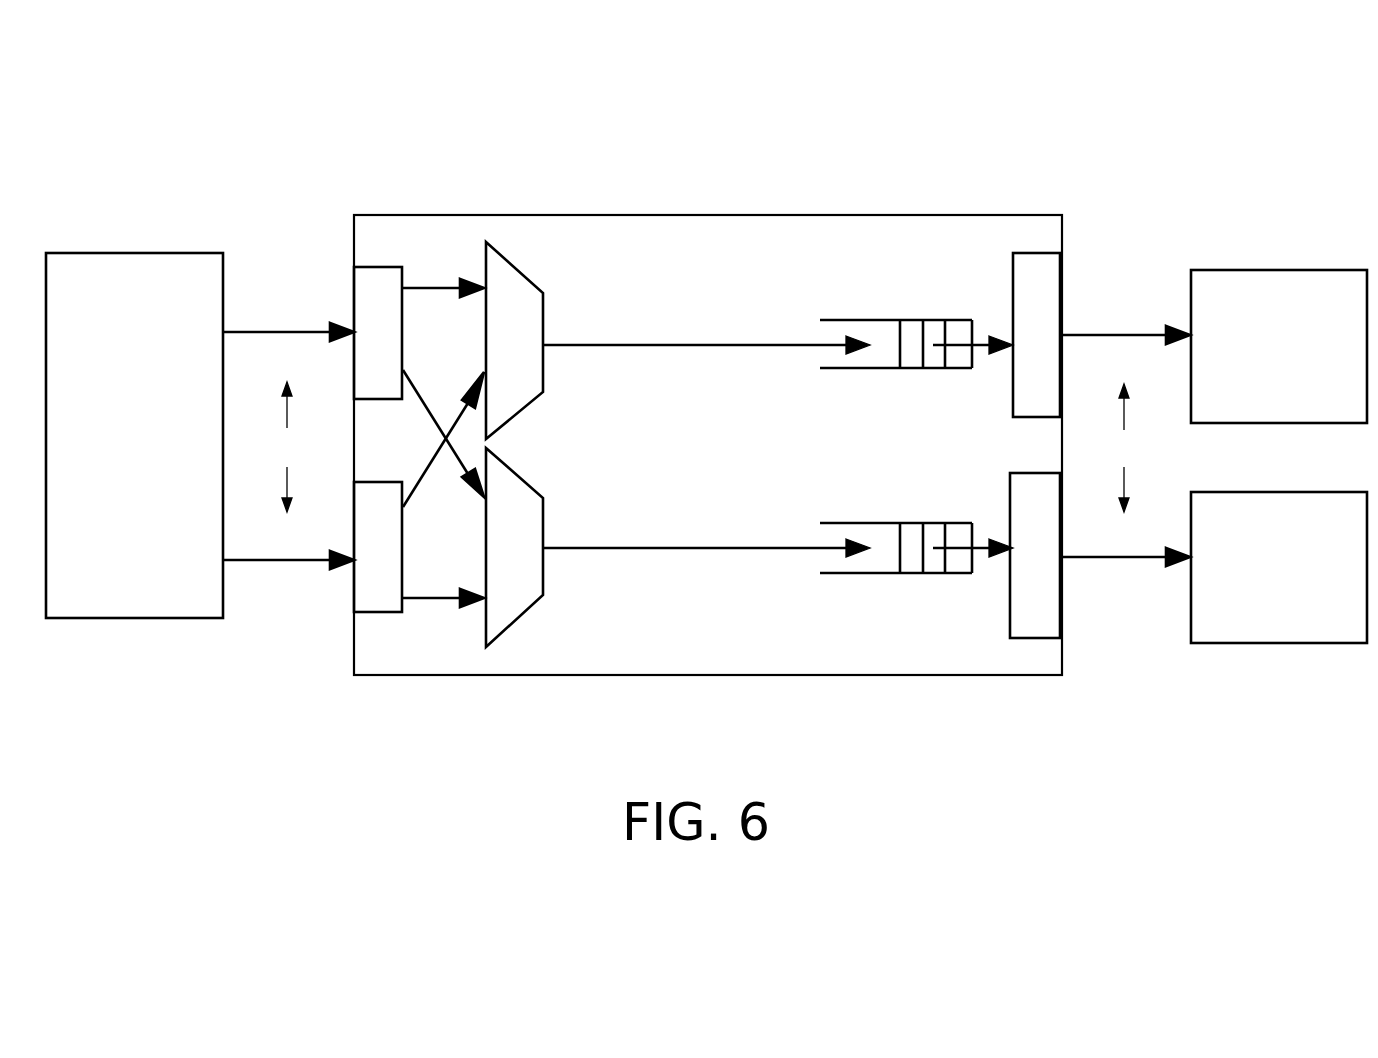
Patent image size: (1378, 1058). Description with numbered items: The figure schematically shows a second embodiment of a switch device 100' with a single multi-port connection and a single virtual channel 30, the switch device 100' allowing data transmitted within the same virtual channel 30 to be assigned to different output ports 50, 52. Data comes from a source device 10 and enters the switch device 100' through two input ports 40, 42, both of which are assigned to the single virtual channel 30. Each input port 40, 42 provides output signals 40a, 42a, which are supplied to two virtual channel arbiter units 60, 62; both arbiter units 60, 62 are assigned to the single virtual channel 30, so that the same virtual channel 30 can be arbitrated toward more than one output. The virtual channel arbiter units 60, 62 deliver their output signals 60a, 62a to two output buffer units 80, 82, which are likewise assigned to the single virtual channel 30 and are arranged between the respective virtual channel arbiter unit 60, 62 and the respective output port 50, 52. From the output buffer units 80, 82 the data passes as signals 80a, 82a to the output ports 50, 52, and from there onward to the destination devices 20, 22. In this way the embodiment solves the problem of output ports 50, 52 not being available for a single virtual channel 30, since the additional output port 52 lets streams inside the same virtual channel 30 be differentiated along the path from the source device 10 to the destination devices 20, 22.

The source device 10 is at (141, 253).
The destination device 20 is at (1284, 270).
The destination device 22 is at (1281, 643).
The virtual channel 30 is at (271, 459).
The input port 40 is at (381, 267).
The input port 42 is at (376, 612).
The output signal of input port 40a is at (428, 288).
The output signal of input port 42a is at (420, 483).
The output port 50 is at (1038, 253).
The output port 52 is at (1033, 638).
The virtual channel arbiter unit 60 is at (545, 374).
The virtual channel arbiter unit 62 is at (545, 578).
The output signal of virtual channel arbiter unit 60a is at (558, 345).
The output signal of virtual channel arbiter unit 62a is at (563, 548).
The output buffer unit 80 is at (875, 320).
The output buffer unit 82 is at (869, 573).
The output signal of output buffer unit 80a is at (982, 342).
The output signal of output buffer unit 82a is at (985, 555).
The switch device 100' is at (708, 408).